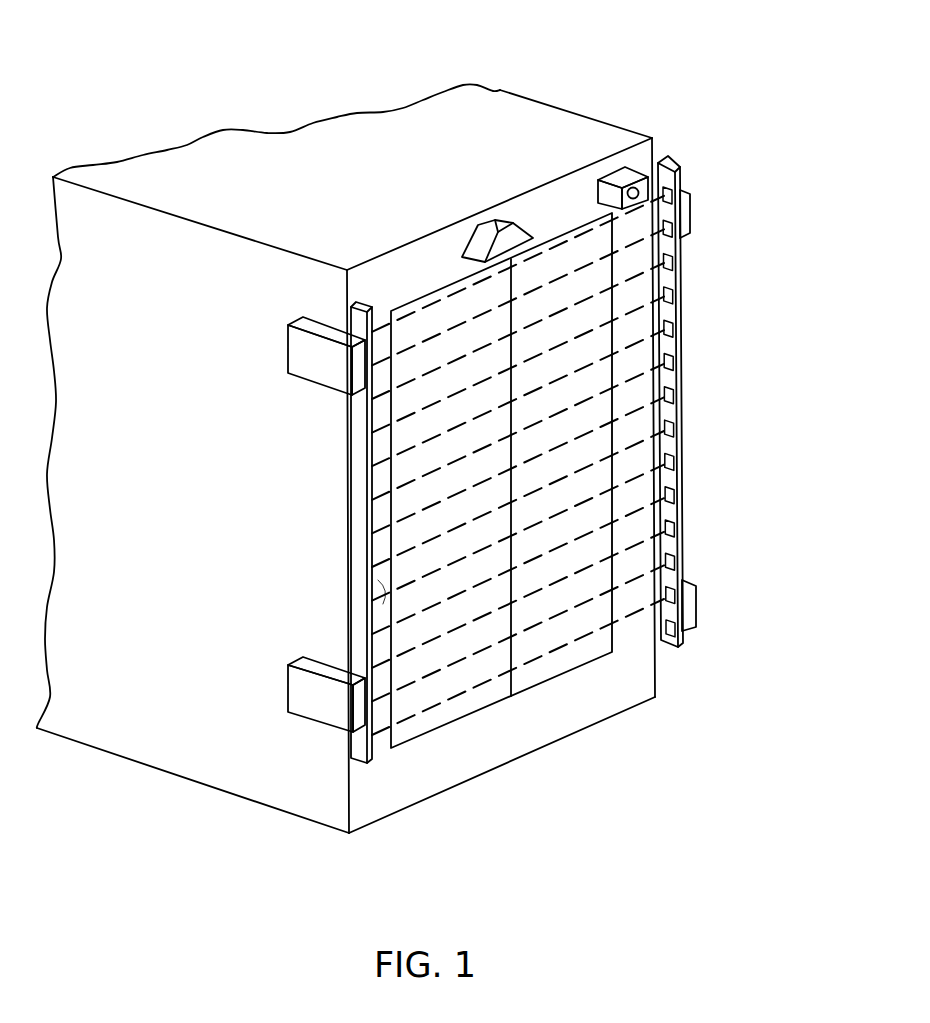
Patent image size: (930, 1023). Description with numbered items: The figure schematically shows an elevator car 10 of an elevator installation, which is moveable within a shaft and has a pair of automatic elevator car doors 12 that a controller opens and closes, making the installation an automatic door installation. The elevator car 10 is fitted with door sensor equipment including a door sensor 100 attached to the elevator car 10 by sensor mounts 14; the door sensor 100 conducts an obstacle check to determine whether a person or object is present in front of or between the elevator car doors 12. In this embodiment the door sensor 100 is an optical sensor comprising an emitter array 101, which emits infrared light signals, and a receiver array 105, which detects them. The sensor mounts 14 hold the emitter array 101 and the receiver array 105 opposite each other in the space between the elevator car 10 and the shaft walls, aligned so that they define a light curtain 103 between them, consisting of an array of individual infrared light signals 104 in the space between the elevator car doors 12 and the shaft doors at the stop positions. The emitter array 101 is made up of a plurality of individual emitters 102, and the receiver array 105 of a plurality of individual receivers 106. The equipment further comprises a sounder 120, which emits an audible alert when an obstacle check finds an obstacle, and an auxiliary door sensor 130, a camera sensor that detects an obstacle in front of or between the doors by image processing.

The elevator car 10 is at (93, 48).
The door sensor 100 is at (760, 146).
The elevator car doors 12 is at (562, 256).
The sensor mounts 14 is at (300, 352).
The emitter array 101 is at (357, 512).
The emitters 102 is at (380, 603).
The light curtain 103 is at (531, 644).
The infrared light signals 104 is at (575, 637).
The receiver array 105 is at (684, 374).
The receivers 106 is at (671, 399).
The sounder 120 is at (626, 167).
The auxiliary door sensor 130 is at (497, 218).